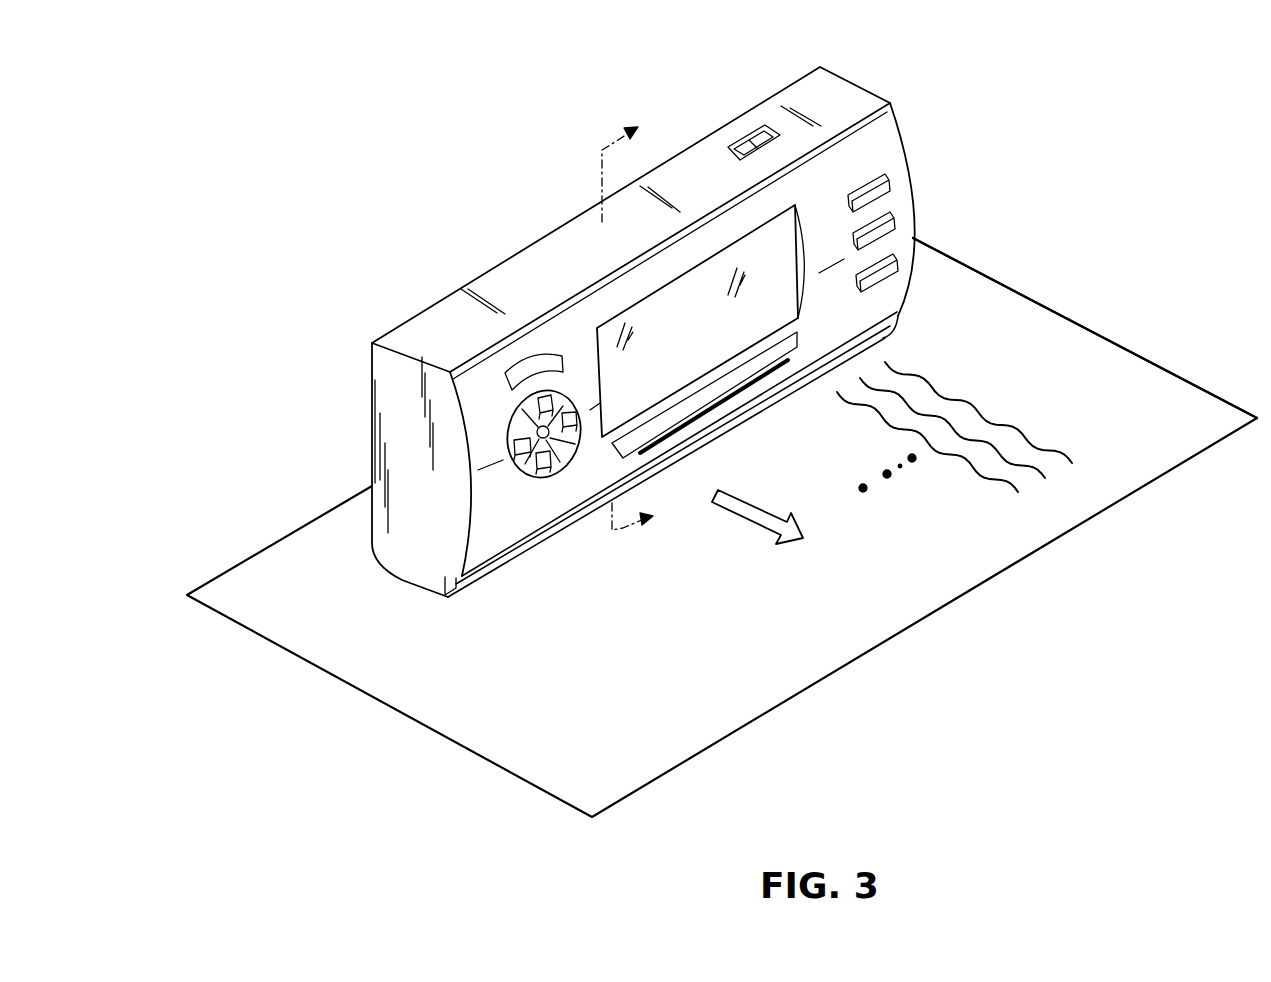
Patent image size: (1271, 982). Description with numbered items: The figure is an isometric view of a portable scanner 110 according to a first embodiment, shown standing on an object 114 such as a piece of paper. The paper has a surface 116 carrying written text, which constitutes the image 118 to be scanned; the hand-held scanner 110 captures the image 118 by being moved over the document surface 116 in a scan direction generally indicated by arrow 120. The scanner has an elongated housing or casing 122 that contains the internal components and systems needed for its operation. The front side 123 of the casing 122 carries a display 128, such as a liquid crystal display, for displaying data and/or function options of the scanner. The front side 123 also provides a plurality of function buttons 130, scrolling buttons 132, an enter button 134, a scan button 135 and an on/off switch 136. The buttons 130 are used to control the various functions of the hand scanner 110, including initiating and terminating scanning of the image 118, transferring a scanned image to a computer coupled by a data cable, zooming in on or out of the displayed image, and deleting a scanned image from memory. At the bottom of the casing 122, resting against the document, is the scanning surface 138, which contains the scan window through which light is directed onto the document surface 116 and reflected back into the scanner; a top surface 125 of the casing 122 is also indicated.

The portable scanner 110 is at (292, 232).
The object 114 is at (275, 533).
The surface 116 is at (1113, 356).
The image 118 is at (1010, 428).
The arrow 120 is at (753, 524).
The housing 122 is at (548, 232).
The front side 123 is at (542, 526).
The top surface 125 is at (847, 95).
The display 128 is at (710, 346).
The function buttons 130 is at (900, 263).
The scrolling buttons 132 is at (576, 387).
The enter button 134 is at (510, 372).
The scan button 135 is at (767, 360).
The on/off switch 136 is at (740, 143).
The scanning surface 138 is at (410, 581).